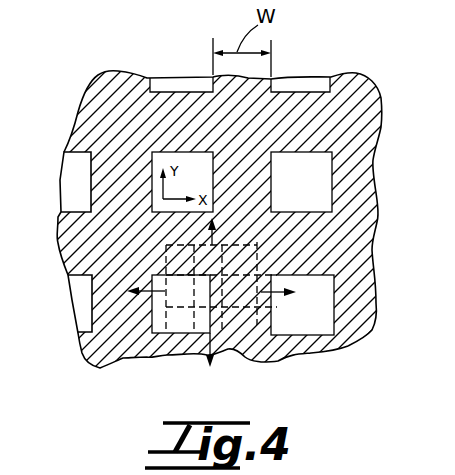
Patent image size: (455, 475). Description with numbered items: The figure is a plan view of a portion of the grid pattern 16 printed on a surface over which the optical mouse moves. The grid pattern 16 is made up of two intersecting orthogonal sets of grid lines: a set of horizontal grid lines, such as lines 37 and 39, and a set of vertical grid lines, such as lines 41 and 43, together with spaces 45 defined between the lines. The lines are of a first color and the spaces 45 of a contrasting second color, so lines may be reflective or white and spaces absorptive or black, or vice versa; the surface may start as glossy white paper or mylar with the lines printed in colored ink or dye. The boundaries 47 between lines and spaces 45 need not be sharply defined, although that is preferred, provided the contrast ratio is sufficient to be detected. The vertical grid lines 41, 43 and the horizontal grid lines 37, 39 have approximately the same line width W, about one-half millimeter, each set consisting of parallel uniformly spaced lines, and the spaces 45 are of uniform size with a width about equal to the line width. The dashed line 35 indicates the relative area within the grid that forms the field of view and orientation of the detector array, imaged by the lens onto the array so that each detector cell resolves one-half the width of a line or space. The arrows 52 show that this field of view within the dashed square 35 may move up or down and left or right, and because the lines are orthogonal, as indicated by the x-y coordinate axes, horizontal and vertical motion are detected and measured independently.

The grid pattern 16 is at (378, 163).
The dashed line 35 is at (272, 262).
The horizontal grid line 37 is at (73, 131).
The horizontal grid line 39 is at (59, 243).
The vertical grid line 41 is at (121, 358).
The vertical grid line 43 is at (245, 358).
The spaces 45 is at (318, 312).
The boundaries 47 is at (276, 163).
The arrows 52 is at (215, 230).